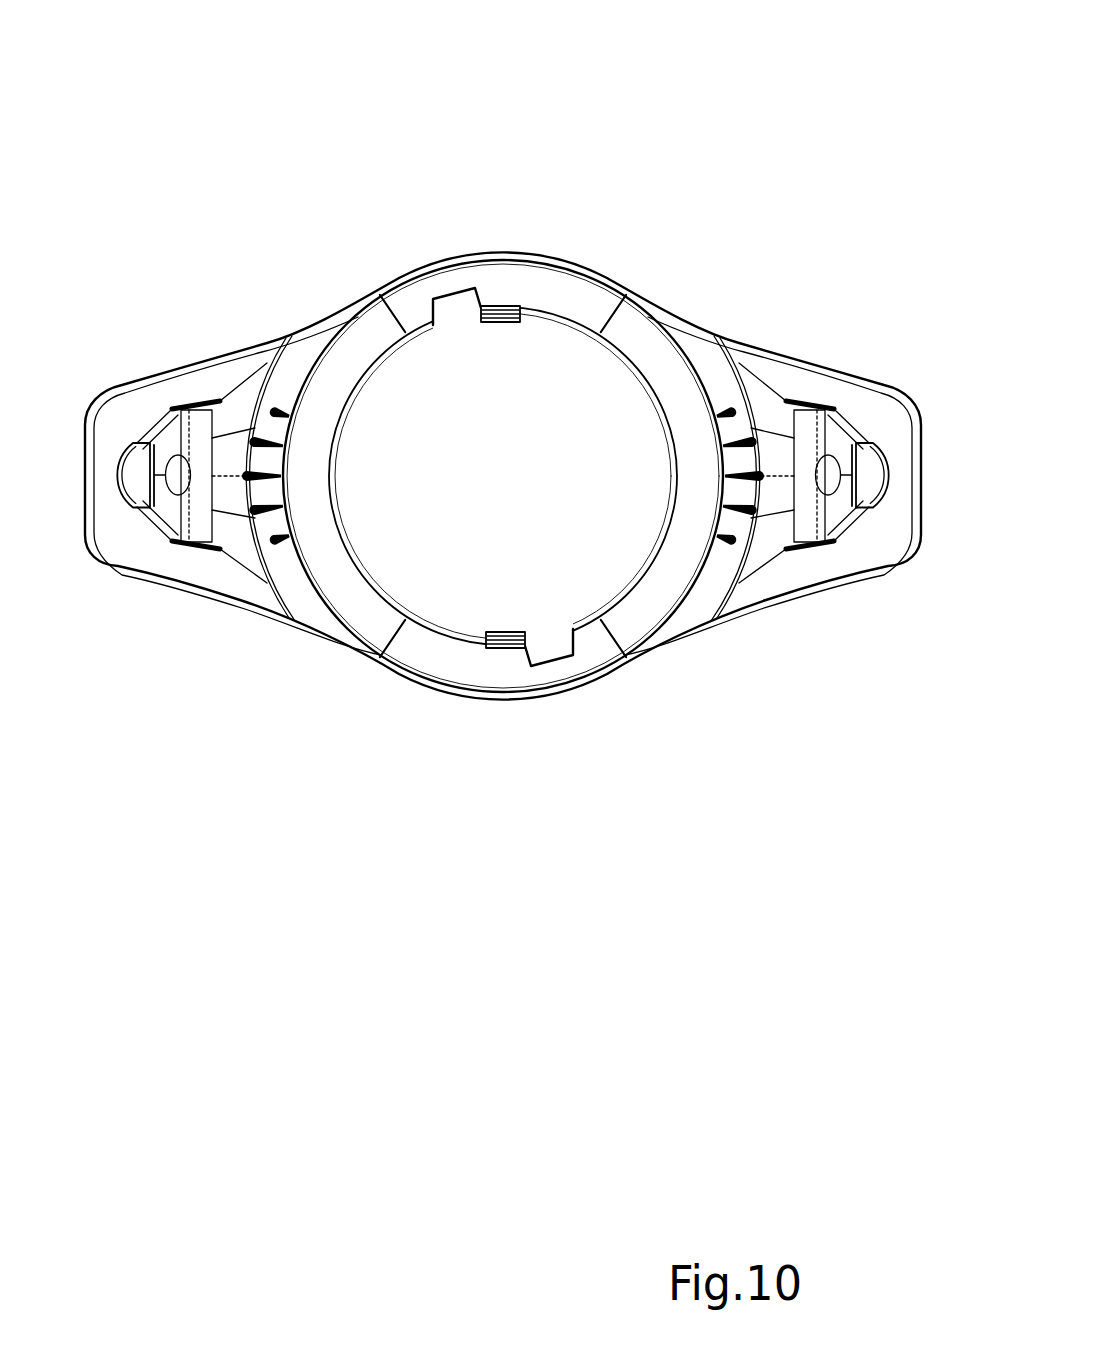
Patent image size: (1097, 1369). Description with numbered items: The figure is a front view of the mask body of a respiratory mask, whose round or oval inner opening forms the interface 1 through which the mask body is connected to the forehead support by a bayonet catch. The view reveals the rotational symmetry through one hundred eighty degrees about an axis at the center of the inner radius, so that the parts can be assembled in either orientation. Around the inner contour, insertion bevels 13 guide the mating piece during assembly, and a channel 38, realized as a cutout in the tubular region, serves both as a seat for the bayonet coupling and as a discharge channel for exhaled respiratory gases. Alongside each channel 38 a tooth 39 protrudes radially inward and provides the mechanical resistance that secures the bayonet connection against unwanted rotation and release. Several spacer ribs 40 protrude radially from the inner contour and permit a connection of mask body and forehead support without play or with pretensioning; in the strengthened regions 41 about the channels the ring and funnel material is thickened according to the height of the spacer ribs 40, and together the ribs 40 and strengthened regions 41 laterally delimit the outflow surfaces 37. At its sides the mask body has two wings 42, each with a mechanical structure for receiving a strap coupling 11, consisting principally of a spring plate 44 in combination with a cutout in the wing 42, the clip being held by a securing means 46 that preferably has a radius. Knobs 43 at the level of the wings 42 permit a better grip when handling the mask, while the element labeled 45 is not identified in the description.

The interface 1 is at (305, 310).
The strap coupling 11 is at (652, 585).
The insertion bevels 13 is at (564, 480).
The outflow surfaces 37 is at (491, 339).
The channel 38 is at (458, 316).
The tooth 39 is at (500, 310).
The spacer ribs 40 is at (303, 560).
The strengthened regions 41 is at (588, 308).
The wings 42 is at (126, 532).
The knobs 43 is at (757, 427).
The spring plate 44 is at (822, 433).
The boss 45 is at (137, 466).
The securing means 46 is at (826, 482).